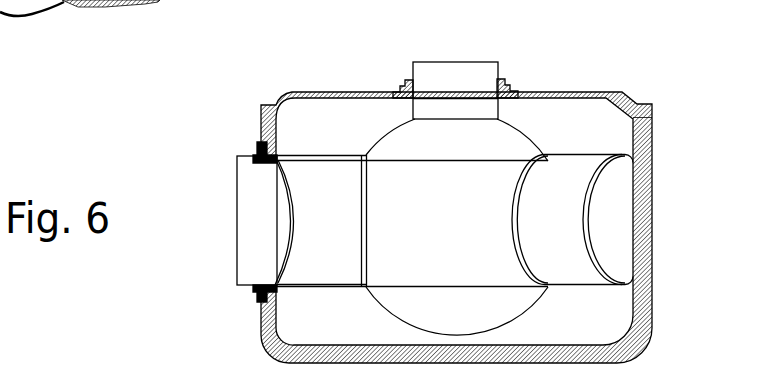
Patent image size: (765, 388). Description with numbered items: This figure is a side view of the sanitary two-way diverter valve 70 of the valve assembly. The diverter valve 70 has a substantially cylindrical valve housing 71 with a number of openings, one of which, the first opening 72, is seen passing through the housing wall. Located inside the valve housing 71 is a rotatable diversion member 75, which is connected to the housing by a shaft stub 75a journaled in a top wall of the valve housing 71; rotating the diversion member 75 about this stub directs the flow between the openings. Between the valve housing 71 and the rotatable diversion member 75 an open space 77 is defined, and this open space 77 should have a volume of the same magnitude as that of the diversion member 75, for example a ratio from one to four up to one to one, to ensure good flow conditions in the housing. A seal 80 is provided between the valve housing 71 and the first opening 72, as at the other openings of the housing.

The sanitary two-way diverter valve 70 is at (216, 139).
The valve housing 71 is at (262, 133).
The first opening 72 is at (237, 191).
The rotatable diversion member 75 is at (396, 138).
The shaft stub 75a is at (450, 62).
The open space 77 is at (303, 327).
The seal 80 is at (260, 291).